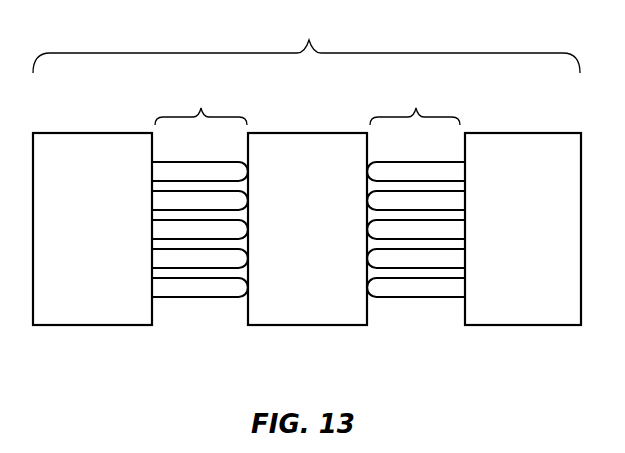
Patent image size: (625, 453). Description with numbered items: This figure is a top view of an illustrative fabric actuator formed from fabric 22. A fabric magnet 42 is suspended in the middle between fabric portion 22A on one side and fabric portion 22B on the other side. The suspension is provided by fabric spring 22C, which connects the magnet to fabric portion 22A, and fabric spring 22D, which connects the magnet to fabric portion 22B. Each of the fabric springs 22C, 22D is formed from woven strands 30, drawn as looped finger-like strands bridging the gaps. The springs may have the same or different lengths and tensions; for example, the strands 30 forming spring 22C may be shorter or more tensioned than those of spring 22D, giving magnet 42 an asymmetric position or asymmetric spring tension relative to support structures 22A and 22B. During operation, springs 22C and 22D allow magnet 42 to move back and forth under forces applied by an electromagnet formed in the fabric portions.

The fabric 22 is at (306, 45).
The fabric portion 22A is at (98, 315).
The fabric portion 22B is at (521, 315).
The fabric spring 22C is at (201, 107).
The fabric spring 22D is at (415, 107).
The woven strands 30 is at (197, 300).
The fabric magnet 42 is at (307, 315).